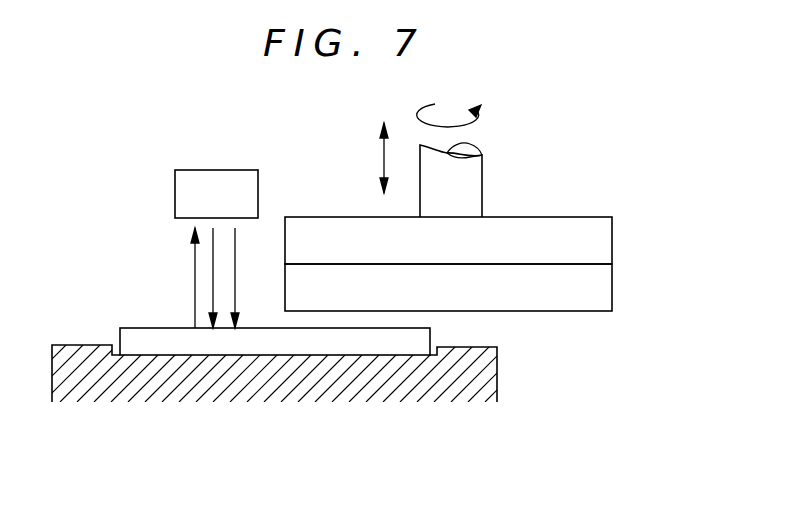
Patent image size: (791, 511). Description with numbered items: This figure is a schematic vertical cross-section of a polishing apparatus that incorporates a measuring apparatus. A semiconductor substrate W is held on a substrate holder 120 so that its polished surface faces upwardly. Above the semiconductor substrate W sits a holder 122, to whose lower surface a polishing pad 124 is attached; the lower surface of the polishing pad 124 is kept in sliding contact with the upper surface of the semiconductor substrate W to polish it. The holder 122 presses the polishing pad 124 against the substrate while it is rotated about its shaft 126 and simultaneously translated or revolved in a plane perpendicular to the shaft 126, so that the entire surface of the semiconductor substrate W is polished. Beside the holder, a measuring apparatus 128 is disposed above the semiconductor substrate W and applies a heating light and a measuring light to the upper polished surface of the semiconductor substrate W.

The substrate holder 120 is at (78, 345).
The semiconductor substrate W is at (395, 355).
The measuring apparatus 128 is at (182, 193).
The holder 122 is at (568, 222).
The polishing pad 124 is at (613, 294).
The shaft 126 is at (482, 168).